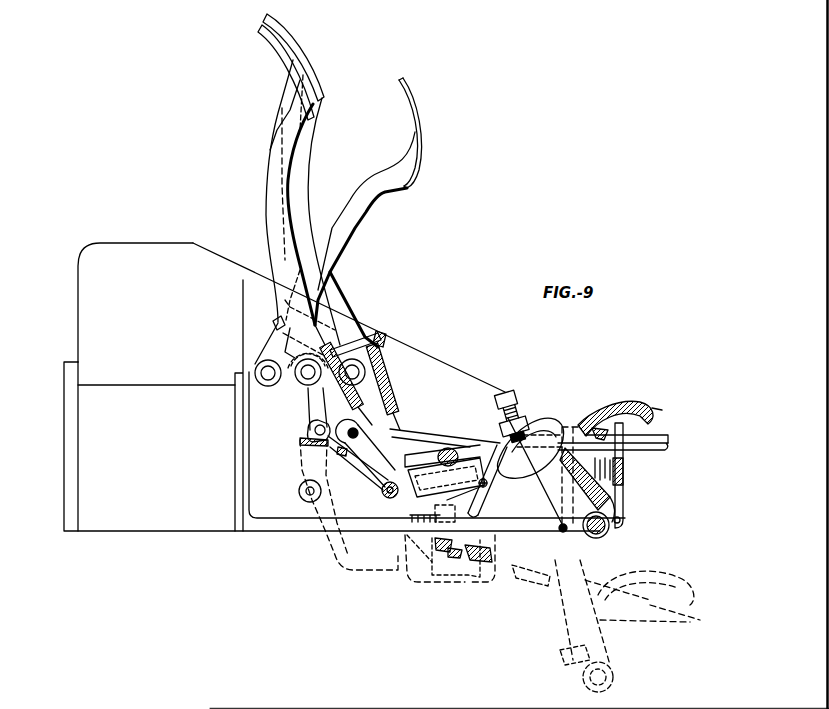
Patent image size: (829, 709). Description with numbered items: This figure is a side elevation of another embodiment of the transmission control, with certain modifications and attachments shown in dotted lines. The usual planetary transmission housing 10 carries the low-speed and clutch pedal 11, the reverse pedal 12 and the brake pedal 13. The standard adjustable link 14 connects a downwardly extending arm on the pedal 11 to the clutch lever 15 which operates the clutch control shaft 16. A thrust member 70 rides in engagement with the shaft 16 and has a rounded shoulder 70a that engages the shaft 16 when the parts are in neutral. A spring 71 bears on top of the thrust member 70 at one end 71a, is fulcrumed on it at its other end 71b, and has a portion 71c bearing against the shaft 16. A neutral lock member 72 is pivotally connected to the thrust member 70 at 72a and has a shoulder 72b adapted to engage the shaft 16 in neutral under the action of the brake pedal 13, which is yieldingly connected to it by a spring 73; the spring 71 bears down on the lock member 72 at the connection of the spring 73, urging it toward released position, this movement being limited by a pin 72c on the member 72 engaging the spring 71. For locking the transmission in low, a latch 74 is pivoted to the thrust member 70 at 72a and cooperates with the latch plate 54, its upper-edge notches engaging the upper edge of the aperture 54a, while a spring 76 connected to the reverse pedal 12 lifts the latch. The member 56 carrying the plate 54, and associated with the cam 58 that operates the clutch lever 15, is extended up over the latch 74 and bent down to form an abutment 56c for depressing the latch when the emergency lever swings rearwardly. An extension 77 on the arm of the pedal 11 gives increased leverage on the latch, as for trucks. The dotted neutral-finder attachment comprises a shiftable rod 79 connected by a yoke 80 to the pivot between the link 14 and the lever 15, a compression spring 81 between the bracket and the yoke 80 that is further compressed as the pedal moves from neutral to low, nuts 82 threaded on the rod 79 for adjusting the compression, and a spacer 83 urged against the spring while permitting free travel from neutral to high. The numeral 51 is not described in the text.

The housing 10 is at (135, 252).
The low-speed and clutch pedal 11 is at (270, 160).
The reverse pedal 12 is at (350, 236).
The brake pedal 13 is at (300, 178).
The adjustable link 14 is at (326, 461).
The clutch lever 15 is at (505, 417).
The clutch control shaft 16 is at (446, 472).
The rod 51 is at (543, 475).
The latch plate 54 is at (646, 657).
The aperture 54a is at (640, 432).
The member 56 is at (598, 412).
The abutment 56c is at (672, 399).
The cam 58 is at (545, 410).
The thrust member 70 is at (455, 430).
The rounded shoulder 70a is at (442, 459).
The spring 71 is at (500, 486).
The spring end bearing on thrust member 71a is at (392, 428).
The spring fulcrum 71b is at (496, 452).
The spring portion bearing against shaft 71c is at (466, 501).
The neutral lock member 72 is at (480, 520).
The pivotal connection 72a is at (412, 481).
The shoulder 72b is at (446, 509).
The pin 72c is at (427, 520).
The spring 73 is at (392, 378).
The latch 74 is at (640, 450).
The spring 76 is at (350, 383).
The extension 77 is at (300, 473).
The shiftable rod 79 is at (450, 558).
The yoke 80 is at (389, 504).
The compression spring 81 is at (453, 558).
The nuts 82 is at (478, 565).
The spacer 83 is at (495, 543).